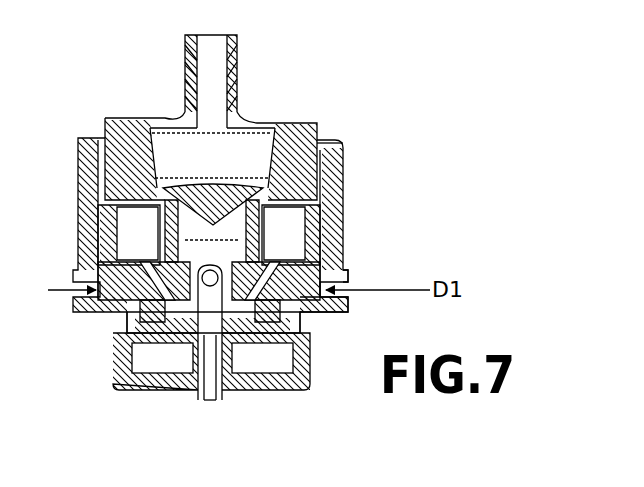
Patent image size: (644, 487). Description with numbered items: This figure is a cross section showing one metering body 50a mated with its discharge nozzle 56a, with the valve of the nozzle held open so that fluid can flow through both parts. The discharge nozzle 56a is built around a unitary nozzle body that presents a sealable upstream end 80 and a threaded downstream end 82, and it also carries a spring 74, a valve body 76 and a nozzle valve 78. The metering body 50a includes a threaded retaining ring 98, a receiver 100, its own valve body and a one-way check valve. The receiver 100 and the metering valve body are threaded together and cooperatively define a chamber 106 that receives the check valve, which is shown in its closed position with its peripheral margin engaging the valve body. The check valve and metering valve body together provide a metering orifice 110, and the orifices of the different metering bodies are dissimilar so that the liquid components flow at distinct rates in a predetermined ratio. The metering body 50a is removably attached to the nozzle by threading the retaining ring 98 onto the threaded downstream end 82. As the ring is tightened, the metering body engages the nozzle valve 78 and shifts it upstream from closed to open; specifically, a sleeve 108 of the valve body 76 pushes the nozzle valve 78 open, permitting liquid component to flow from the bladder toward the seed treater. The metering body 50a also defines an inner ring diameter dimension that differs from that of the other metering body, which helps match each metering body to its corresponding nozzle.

The metering body 50a is at (335, 147).
The discharge nozzle 56a is at (348, 305).
The spring 74 is at (238, 315).
The valve body 76 is at (227, 363).
The nozzle valve 78 is at (340, 276).
The sealable upstream end 80 is at (120, 376).
The threaded downstream end 82 is at (95, 240).
The threaded retaining ring 98 is at (344, 183).
The receiver 100 is at (292, 122).
The chamber 106 is at (245, 148).
The sleeve 108 is at (100, 218).
The metering orifice 110 is at (182, 183).